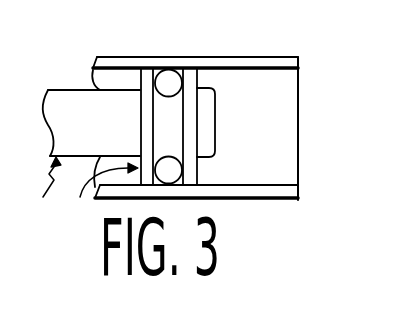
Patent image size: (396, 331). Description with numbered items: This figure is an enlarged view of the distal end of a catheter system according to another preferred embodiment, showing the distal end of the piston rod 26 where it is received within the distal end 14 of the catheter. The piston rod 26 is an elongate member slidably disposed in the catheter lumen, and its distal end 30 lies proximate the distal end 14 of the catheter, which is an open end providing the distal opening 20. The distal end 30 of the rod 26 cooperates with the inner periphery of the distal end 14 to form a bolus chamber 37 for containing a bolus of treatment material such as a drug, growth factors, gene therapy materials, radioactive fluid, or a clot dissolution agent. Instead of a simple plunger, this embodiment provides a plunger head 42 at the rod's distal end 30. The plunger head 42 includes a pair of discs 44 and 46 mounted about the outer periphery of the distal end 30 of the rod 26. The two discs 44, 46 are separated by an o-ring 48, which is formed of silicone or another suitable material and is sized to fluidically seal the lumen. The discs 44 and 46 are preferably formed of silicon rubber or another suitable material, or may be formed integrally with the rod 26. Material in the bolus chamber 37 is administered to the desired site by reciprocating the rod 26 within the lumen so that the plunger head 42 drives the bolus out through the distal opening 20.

The distal end 14 is at (285, 56).
The distal opening 20 is at (298, 108).
The piston rod 26 is at (41, 192).
The distal end 30 is at (118, 107).
The bolus chamber 37 is at (258, 145).
The plunger head 42 is at (99, 198).
The disc 44 is at (147, 82).
The disc 46 is at (192, 80).
The o-ring 48 is at (163, 170).